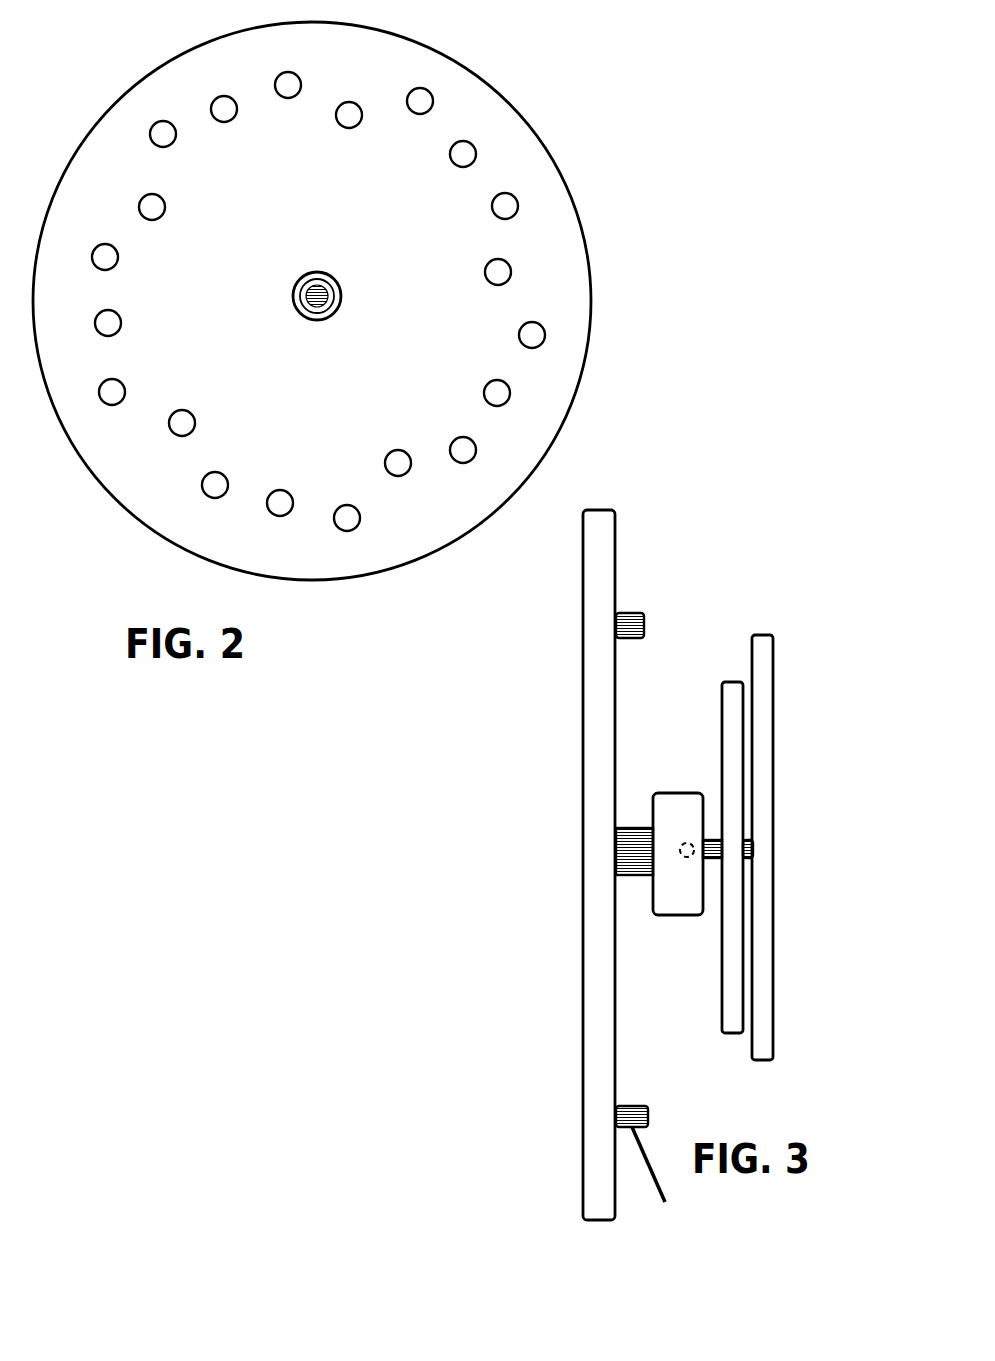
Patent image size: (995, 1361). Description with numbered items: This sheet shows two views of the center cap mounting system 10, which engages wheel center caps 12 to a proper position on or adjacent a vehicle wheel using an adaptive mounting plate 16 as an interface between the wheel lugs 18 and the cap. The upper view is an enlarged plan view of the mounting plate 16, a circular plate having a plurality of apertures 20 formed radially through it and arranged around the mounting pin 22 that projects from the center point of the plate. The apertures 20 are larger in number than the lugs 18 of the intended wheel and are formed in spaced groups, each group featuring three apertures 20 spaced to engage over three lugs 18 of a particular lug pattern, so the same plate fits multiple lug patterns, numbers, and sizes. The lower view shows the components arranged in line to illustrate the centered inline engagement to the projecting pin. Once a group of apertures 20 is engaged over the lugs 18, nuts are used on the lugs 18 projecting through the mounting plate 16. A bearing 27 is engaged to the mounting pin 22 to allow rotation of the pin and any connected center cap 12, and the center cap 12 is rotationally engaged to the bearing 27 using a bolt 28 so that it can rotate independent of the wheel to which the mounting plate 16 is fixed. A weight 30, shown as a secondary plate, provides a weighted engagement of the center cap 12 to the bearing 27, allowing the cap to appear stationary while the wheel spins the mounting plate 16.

In FIG. 3, the center cap mounting system 10 is at (776, 478).
In FIG. 3, the wheel center cap 12 is at (768, 670).
In FIG. 2, the mounting plate 16 is at (585, 230).
In FIG. 3, the mounting plate 16 is at (605, 540).
In FIG. 3, the lugs 18 is at (635, 610).
In FIG. 2, the apertures 20 is at (542, 324).
In FIG. 2, the mounting pin 22 is at (305, 280).
In FIG. 3, the mounting pin 22 is at (627, 863).
In FIG. 3, the bearing 27 is at (672, 800).
In FIG. 3, the bolt 28 is at (710, 853).
In FIG. 3, the weight 30 is at (727, 710).